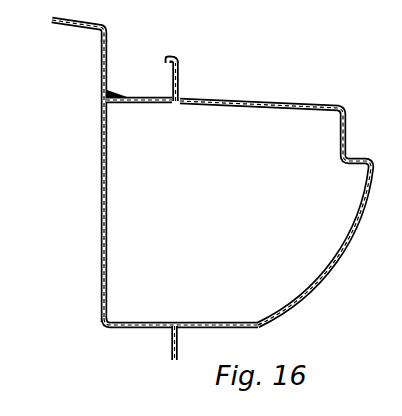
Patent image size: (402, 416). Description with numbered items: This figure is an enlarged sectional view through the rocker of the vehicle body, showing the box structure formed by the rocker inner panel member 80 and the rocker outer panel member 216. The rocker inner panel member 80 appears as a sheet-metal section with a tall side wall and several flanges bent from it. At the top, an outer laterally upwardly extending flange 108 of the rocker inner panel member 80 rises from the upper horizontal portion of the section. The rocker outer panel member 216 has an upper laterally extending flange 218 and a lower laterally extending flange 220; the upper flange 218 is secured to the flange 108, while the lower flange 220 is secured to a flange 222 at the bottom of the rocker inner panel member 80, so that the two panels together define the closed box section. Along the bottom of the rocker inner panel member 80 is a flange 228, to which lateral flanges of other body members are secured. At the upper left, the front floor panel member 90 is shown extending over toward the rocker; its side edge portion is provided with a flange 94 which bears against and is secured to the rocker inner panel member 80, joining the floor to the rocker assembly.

The rocker inner panel member 80 is at (102, 227).
The front floor panel member 90 is at (73, 28).
The flange 94 is at (103, 88).
The outer laterally upwardly extending flange 108 is at (172, 74).
The upper laterally extending flange 218 is at (179, 63).
The rocker outer panel member 216 is at (269, 106).
The flange 228 is at (129, 322).
The flange 222 is at (171, 339).
The lower laterally extending flange 220 is at (179, 352).